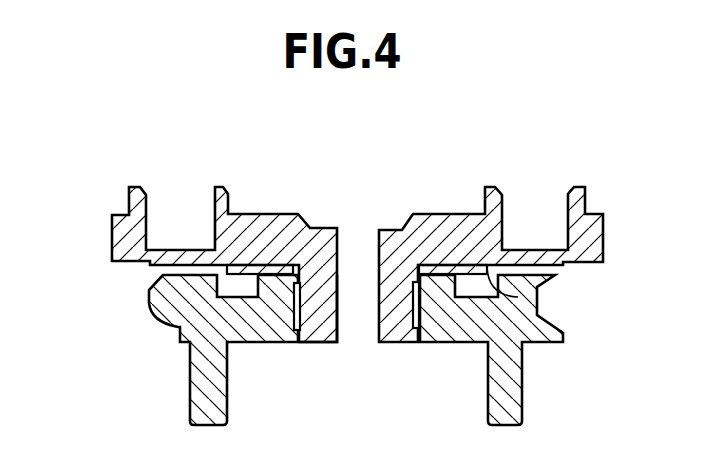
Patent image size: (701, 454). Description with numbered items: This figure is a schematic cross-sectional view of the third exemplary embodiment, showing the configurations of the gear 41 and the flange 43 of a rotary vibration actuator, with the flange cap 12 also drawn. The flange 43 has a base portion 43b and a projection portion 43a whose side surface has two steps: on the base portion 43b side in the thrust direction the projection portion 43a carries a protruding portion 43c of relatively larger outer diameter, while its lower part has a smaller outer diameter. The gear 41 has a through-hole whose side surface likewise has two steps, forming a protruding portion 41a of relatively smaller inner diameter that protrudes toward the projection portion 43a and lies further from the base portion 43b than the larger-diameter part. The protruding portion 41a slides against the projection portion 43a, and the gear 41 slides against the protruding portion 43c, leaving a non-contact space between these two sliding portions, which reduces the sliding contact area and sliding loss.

The flange cap 12 is at (518, 297).
The gear 41 is at (513, 367).
The protruding portion 41a is at (413, 336).
The flange 43 is at (593, 230).
The projection portion 43a is at (314, 334).
The base portion 43b is at (112, 249).
The protruding portion 43c is at (298, 279).